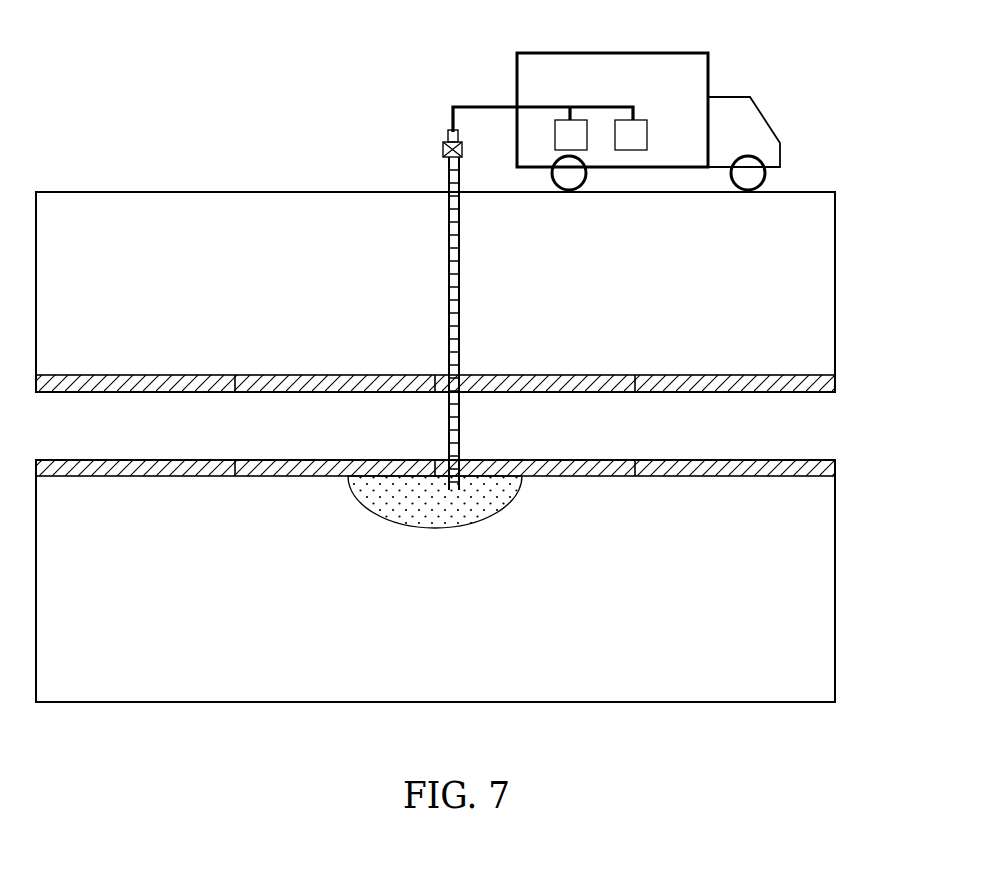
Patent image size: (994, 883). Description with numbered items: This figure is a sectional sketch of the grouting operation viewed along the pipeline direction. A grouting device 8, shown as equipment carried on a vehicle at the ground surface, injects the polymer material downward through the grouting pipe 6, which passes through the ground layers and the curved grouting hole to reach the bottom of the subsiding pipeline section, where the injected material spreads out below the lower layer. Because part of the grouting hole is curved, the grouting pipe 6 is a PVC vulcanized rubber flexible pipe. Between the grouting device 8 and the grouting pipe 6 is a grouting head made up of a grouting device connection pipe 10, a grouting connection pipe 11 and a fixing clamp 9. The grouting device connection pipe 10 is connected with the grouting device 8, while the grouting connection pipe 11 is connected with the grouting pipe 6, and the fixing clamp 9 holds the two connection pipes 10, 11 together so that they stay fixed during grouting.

The grouting pipe 6 is at (453, 262).
The grouting device 8 is at (643, 120).
The fixing clamp 9 is at (452, 133).
The grouting device connection pipe 10 is at (542, 104).
The grouting connection pipe 11 is at (444, 148).